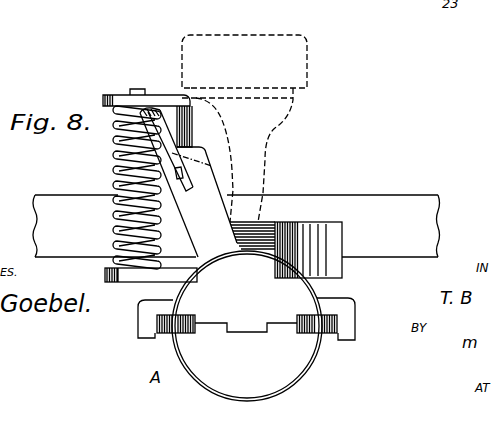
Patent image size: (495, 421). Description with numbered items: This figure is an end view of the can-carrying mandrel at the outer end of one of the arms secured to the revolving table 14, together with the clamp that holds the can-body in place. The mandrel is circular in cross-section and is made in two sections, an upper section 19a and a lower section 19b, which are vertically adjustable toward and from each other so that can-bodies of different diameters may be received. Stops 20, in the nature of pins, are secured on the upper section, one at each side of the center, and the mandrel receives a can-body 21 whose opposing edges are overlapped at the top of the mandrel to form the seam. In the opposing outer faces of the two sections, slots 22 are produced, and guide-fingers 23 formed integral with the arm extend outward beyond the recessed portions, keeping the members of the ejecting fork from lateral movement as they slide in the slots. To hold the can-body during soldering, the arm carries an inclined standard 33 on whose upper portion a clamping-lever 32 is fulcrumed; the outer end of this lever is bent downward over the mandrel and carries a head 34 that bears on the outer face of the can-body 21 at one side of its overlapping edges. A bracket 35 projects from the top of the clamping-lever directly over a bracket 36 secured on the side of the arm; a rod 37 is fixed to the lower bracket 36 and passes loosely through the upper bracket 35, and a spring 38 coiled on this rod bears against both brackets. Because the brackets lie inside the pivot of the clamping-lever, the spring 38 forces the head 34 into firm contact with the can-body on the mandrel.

The revolving table 14 is at (236, 226).
The upper mandrel section 19a is at (251, 252).
The lower mandrel section 19b is at (246, 348).
The stops 20 is at (184, 280).
The can-body 21 is at (318, 371).
The slots 22 is at (313, 333).
The guide-fingers 23 is at (350, 322).
The clamping-lever 32 is at (167, 139).
The standard 33 is at (173, 182).
The head 34 is at (217, 188).
The bracket 35 is at (167, 100).
The bracket 36 is at (106, 276).
The rod 37 is at (137, 88).
The spring 38 is at (118, 149).